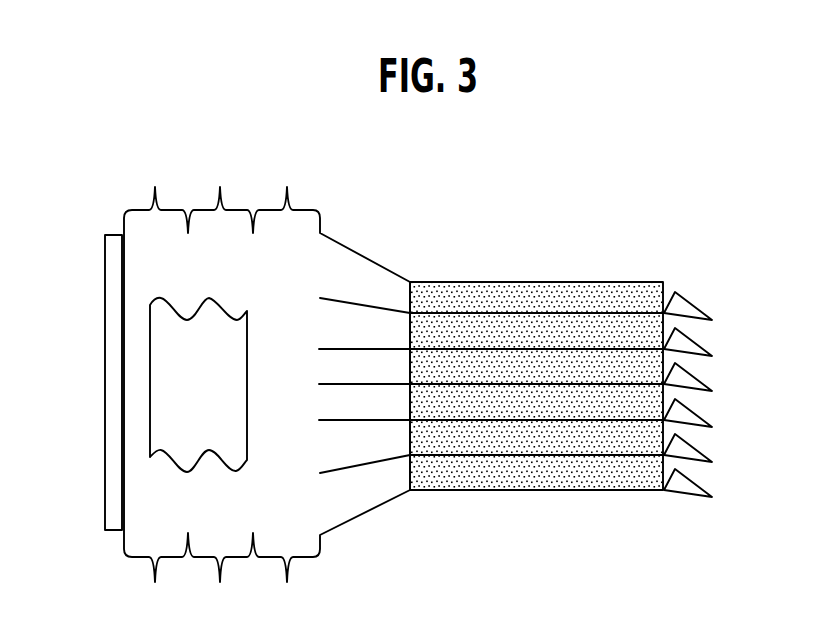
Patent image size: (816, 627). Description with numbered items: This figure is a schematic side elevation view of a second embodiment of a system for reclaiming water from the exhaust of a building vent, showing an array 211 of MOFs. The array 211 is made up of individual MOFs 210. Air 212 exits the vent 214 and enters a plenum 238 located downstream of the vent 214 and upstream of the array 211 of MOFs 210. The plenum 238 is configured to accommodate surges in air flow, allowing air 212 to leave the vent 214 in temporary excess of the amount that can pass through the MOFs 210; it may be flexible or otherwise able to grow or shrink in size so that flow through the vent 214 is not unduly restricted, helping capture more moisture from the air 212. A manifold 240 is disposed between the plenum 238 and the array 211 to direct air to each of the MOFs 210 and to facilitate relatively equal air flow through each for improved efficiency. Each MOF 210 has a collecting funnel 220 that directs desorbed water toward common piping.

The MOF 210 is at (601, 282).
The array of MOFs 211 is at (703, 257).
The air 212 is at (207, 298).
The vent 214 is at (108, 330).
The collecting funnel 220 is at (696, 300).
The plenum 238 is at (304, 211).
The manifold 240 is at (369, 303).